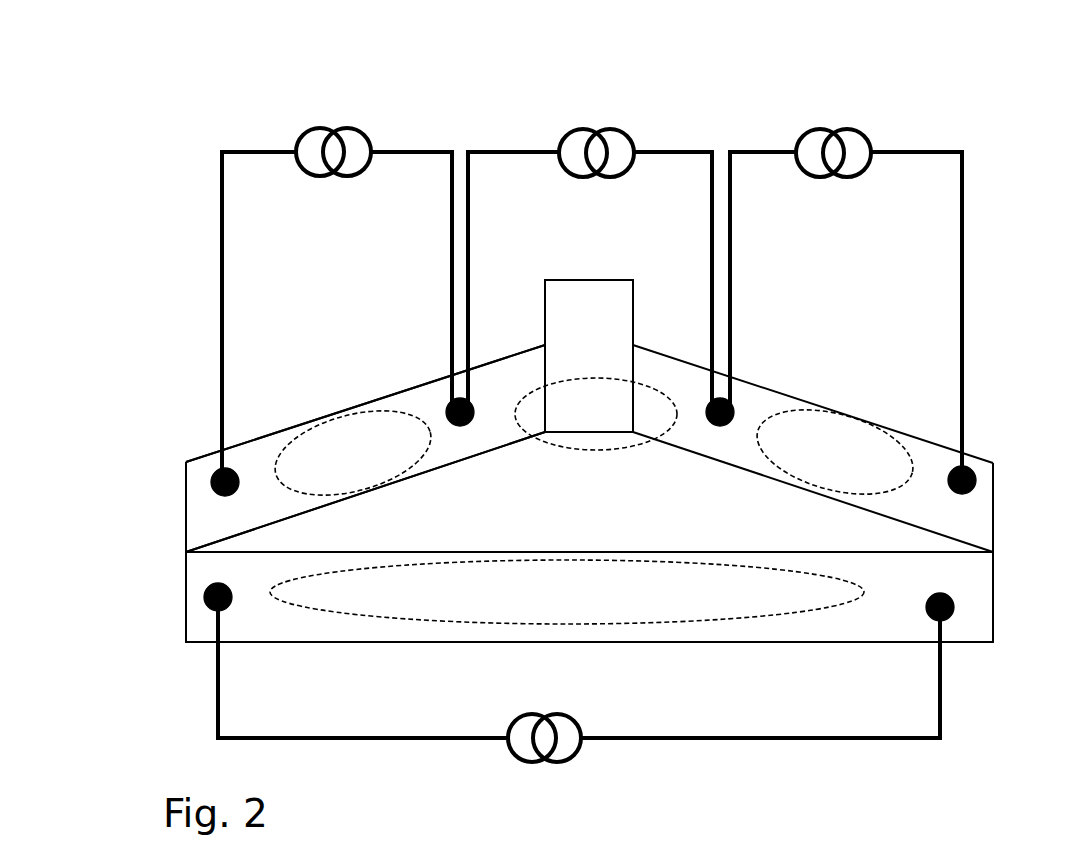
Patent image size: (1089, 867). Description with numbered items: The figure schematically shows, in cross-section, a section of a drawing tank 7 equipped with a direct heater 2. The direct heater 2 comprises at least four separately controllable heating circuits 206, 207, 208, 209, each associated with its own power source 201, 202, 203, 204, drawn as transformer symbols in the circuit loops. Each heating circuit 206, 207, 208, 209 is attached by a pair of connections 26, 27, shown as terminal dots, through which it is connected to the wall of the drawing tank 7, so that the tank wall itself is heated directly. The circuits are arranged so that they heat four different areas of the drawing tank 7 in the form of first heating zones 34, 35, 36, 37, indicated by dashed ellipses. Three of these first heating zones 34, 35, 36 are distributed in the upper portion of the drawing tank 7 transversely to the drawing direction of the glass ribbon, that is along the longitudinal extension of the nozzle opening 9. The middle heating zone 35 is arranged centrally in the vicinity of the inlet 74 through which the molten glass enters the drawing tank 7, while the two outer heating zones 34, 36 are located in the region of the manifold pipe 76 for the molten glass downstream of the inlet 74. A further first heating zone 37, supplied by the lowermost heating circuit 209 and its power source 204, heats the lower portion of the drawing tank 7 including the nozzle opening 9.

The direct heater 2 is at (222, 140).
The drawing tank 7 is at (196, 393).
The nozzle opening 9 is at (367, 650).
The connection 26 is at (212, 492).
The connection 27 is at (448, 405).
The first heating zone 34 is at (290, 420).
The first heating zone 35 is at (533, 410).
The first heating zone 36 is at (905, 450).
The further first heating zone 37 is at (780, 620).
The inlet 74 is at (545, 280).
The manifold pipe 76 is at (948, 455).
The power source 201 is at (350, 128).
The power source 202 is at (615, 128).
The power source 203 is at (860, 128).
The power source 204 is at (530, 760).
The heating circuit 206 is at (220, 245).
The heating circuit 207 is at (710, 268).
The heating circuit 208 is at (960, 272).
The heating circuit 209 is at (715, 742).